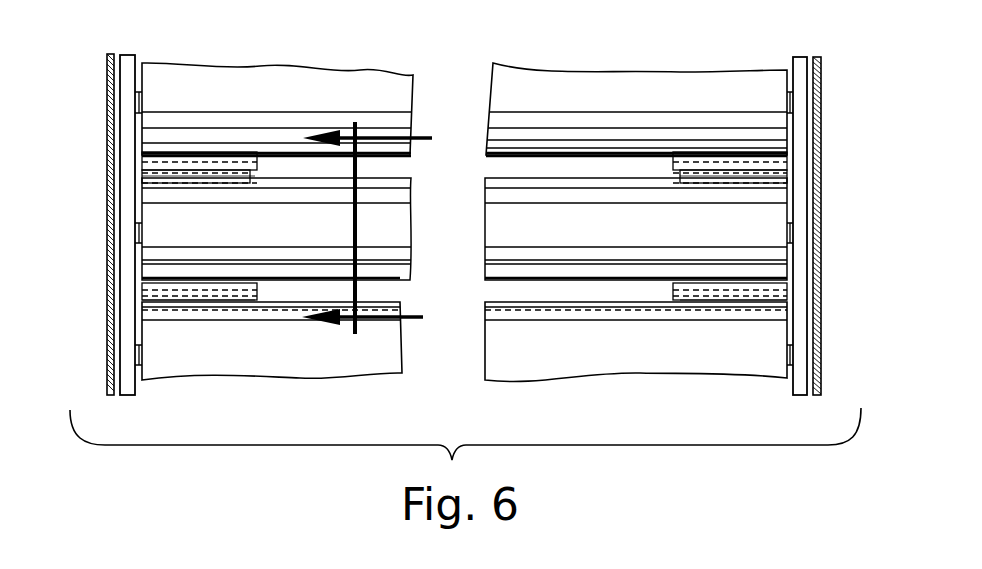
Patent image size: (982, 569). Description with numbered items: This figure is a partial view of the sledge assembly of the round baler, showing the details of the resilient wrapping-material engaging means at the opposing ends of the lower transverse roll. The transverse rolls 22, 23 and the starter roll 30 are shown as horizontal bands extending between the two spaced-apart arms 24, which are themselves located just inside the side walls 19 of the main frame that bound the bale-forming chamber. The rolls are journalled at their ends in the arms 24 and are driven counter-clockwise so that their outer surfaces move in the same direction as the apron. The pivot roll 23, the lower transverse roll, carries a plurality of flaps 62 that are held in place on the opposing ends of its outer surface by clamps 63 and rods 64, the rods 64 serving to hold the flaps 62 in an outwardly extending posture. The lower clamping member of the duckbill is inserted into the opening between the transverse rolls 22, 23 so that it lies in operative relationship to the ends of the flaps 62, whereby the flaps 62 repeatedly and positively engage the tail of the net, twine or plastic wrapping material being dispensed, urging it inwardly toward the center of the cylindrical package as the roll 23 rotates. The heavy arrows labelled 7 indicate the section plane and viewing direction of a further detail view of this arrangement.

The section line of FIG. 7 is at (378, 228).
The side wall 19 is at (108, 100).
The transverse roll 22 is at (531, 90).
The pivot roll 23 is at (760, 215).
The arm 24 is at (130, 63).
The starter roll 30 is at (538, 385).
The flap 62 is at (165, 158).
The clamp 63 is at (230, 178).
The rod 64 is at (232, 280).